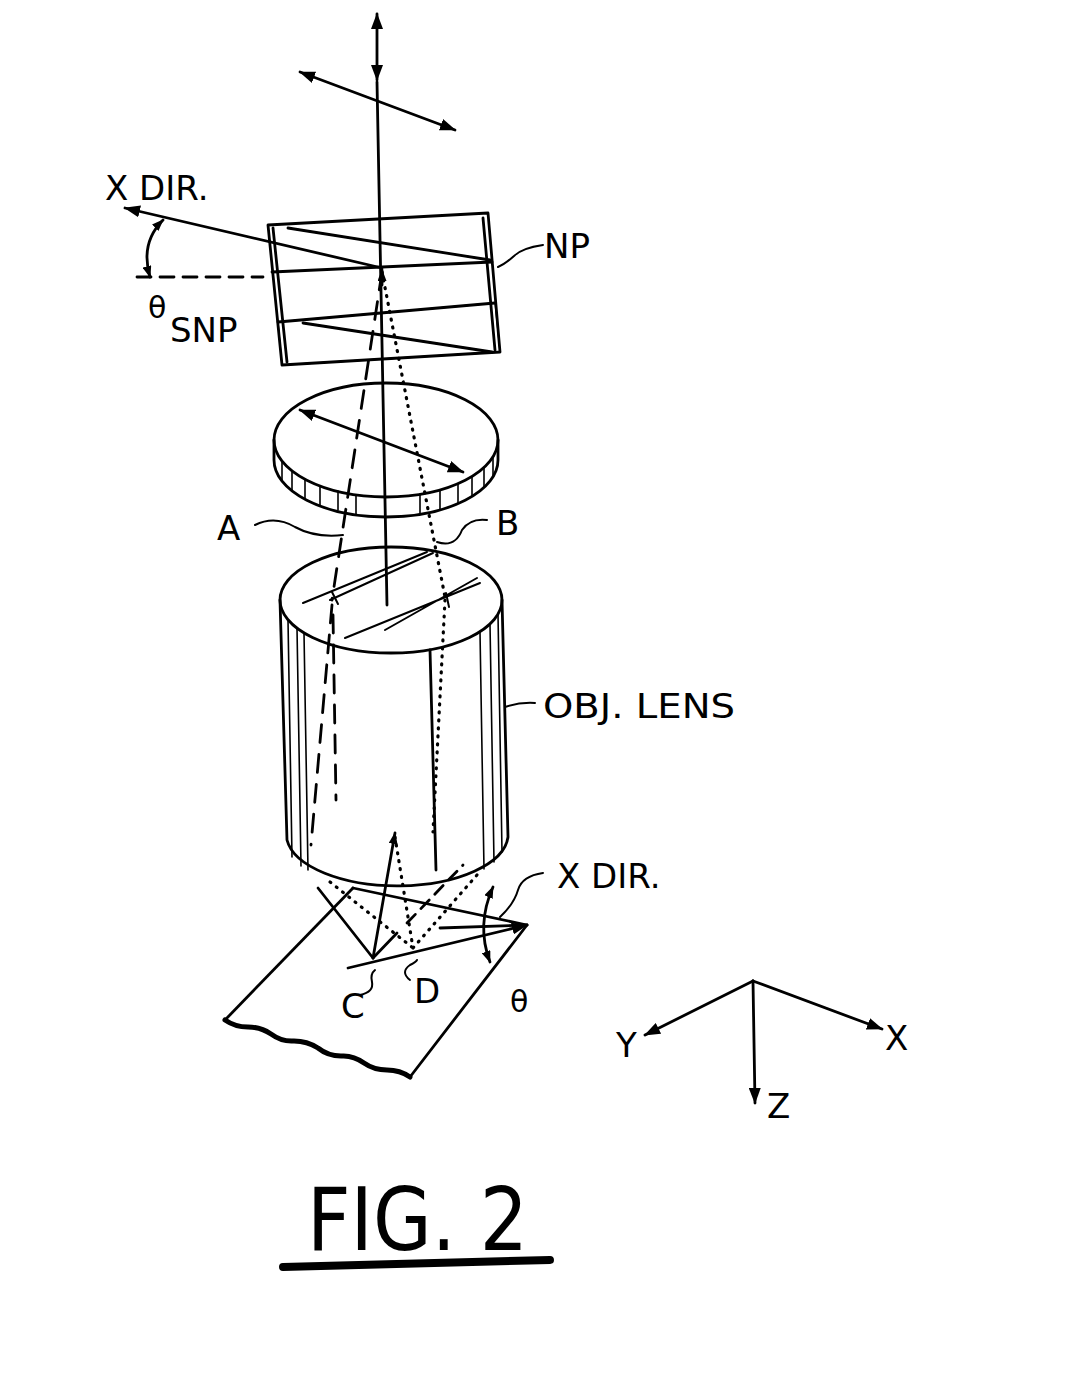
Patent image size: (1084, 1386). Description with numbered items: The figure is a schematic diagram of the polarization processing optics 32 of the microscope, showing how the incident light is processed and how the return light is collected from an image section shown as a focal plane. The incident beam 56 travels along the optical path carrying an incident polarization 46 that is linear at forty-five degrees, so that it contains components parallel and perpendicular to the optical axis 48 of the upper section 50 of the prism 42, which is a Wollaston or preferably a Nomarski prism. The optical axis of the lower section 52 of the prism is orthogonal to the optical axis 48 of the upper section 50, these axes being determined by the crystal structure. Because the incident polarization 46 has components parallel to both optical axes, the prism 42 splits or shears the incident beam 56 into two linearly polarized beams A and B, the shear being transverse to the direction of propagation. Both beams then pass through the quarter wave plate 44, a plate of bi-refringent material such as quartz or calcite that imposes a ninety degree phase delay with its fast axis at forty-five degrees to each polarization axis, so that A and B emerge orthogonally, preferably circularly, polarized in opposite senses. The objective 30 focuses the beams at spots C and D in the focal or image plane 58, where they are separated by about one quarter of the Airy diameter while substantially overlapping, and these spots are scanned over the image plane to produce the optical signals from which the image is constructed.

The objective 30 is at (493, 605).
The polarization processing optics 32 is at (700, 332).
The prism 42 is at (488, 215).
The quarter wave plate 44 is at (480, 428).
The incident polarization 46 is at (417, 112).
The optical axis 48 is at (428, 272).
The upper section 50 is at (477, 338).
The lower section 52 is at (297, 345).
The incident beam 56 is at (380, 51).
The focal or image plane 58 is at (417, 1047).